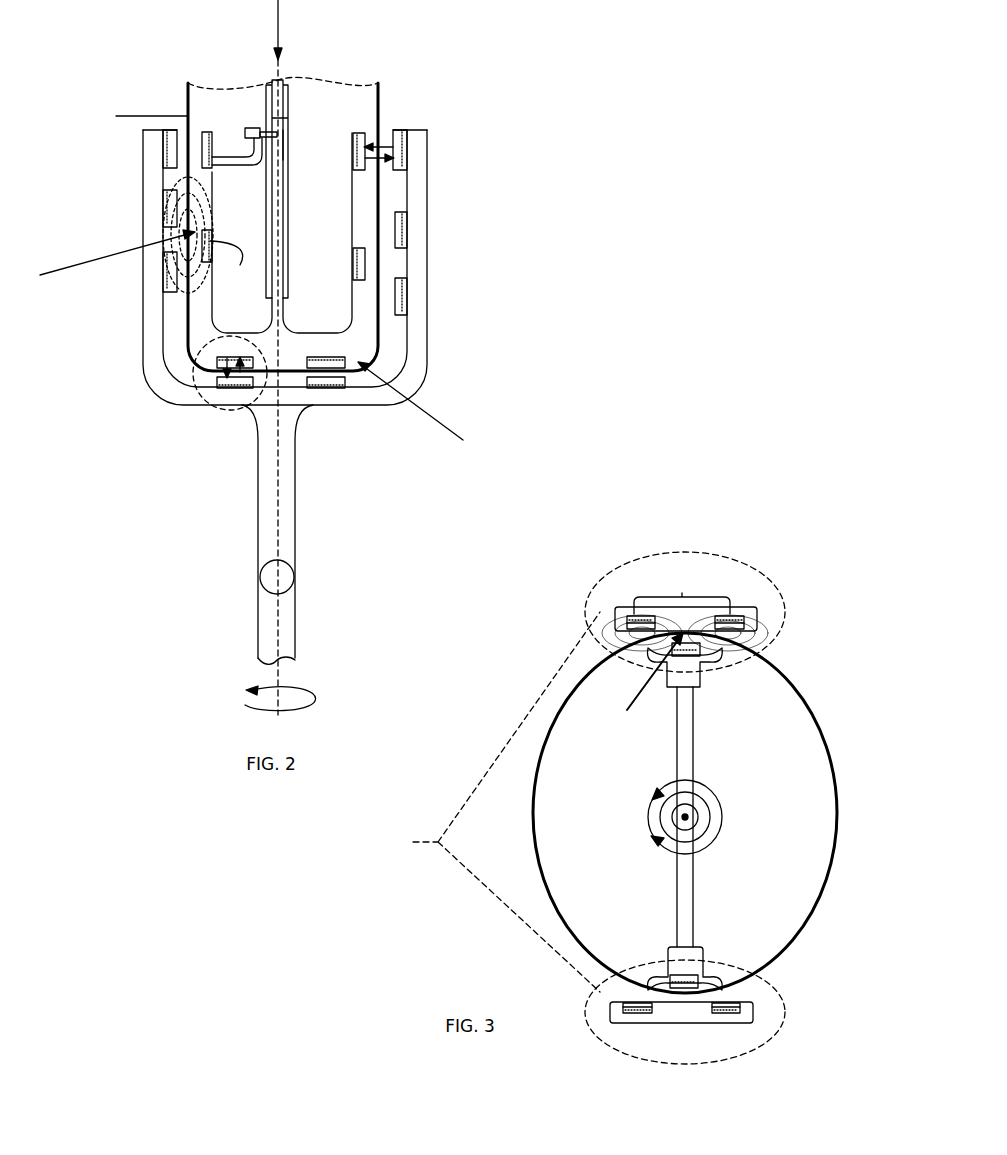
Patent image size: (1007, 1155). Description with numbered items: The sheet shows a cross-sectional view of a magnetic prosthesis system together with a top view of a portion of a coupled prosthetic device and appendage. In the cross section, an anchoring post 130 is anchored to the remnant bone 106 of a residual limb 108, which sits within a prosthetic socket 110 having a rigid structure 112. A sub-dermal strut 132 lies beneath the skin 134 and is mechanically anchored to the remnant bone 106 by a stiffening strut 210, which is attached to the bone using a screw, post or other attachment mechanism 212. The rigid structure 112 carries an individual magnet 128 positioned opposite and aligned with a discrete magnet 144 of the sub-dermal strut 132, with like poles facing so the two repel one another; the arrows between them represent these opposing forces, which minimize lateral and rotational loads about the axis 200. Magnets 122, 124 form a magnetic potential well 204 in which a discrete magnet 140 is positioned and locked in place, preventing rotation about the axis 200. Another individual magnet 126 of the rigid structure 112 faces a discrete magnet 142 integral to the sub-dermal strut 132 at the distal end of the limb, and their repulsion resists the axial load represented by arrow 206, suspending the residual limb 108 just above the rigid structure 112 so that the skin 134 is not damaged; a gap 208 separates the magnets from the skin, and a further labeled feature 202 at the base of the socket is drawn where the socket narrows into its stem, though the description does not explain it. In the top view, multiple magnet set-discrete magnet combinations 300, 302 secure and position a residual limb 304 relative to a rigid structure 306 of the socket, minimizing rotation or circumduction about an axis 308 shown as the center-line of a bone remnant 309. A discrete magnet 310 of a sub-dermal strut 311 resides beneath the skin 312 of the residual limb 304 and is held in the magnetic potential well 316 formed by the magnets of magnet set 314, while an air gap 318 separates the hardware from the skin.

In FIG. 2, the remnant bone 106 is at (283, 147).
In FIG. 2, the residual limb 108 is at (300, 266).
In FIG. 2, the prosthetic socket 110 is at (295, 406).
In FIG. 2, the rigid structure 112 is at (316, 404).
In FIG. 2, the magnet 122 is at (163, 222).
In FIG. 2, the magnet 124 is at (163, 282).
In FIG. 2, the individual magnet 126 is at (220, 383).
In FIG. 2, the individual magnet 128 is at (402, 169).
In FIG. 2, the anchoring post 130 is at (288, 122).
In FIG. 2, the sub-dermal strut 132 is at (353, 333).
In FIG. 2, the skin 134 is at (116, 116).
In FIG. 2, the discrete magnet 140 is at (240, 265).
In FIG. 2, the discrete magnet 142 is at (227, 361).
In FIG. 2, the discrete magnet 144 is at (363, 168).
In FIG. 2, the axis 200 is at (280, 627).
In FIG. 2, the stem 202 is at (232, 411).
In FIG. 2, the magnetic potential well 204 is at (99, 261).
In FIG. 2, the arrow 206 is at (277, 32).
In FIG. 2, the gap 208 is at (182, 148).
In FIG. 2, the stiffening strut 210 is at (245, 131).
In FIG. 2, the attachment mechanism 212 is at (240, 156).
In FIG. 3, the magnet set-discrete magnet combination 300 is at (640, 573).
In FIG. 3, the magnet set-discrete magnet combination 302 is at (669, 1049).
In FIG. 3, the residual limb 304 is at (733, 912).
In FIG. 3, the rigid structure 306 is at (491, 802).
In FIG. 3, the axis 308 is at (670, 817).
In FIG. 3, the bone remnant 309 is at (703, 822).
In FIG. 3, the discrete magnet 310 is at (686, 651).
In FIG. 3, the sub-dermal strut 311 is at (693, 688).
In FIG. 3, the skin 312 is at (787, 948).
In FIG. 3, the magnet set 314 is at (685, 612).
In FIG. 3, the magnetic potential well 316 is at (644, 683).
In FIG. 3, the gap 318 is at (680, 995).